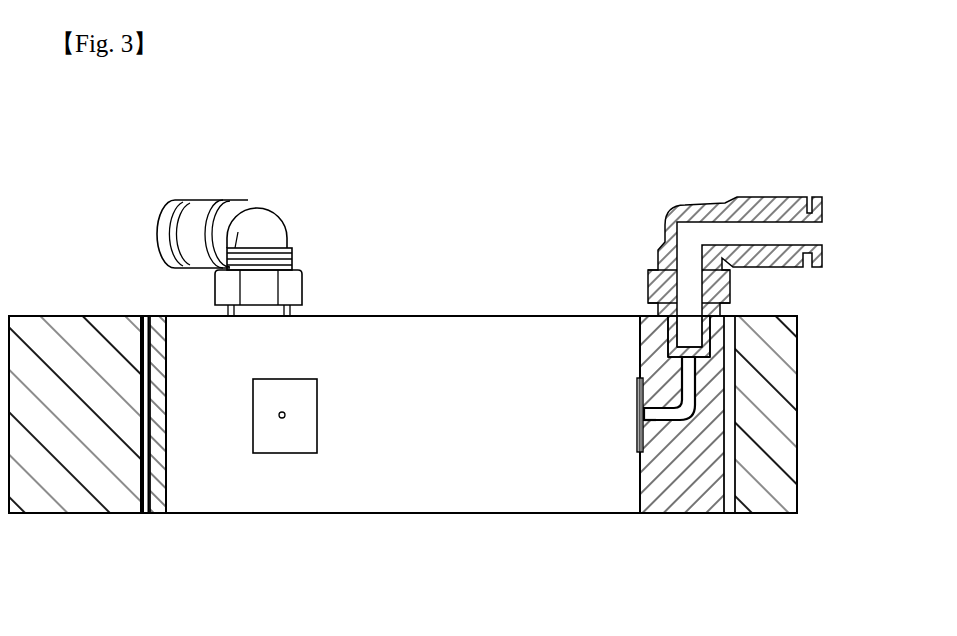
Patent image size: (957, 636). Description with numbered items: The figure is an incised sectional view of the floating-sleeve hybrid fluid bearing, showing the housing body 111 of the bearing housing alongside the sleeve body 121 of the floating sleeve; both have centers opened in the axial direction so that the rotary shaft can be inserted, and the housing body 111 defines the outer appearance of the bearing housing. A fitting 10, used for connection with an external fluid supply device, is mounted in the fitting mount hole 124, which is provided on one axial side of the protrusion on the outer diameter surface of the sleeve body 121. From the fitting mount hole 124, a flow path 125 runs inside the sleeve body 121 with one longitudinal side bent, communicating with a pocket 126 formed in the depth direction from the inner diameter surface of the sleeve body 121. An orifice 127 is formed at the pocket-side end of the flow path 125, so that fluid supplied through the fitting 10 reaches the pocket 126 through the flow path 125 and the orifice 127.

The fitting 10 is at (205, 207).
The housing body 111 is at (62, 500).
The sleeve body 121 is at (463, 500).
The fitting mount hole 124 is at (677, 332).
The flow path 125 is at (697, 380).
The pocket 126 is at (298, 435).
The orifice 127 is at (282, 419).